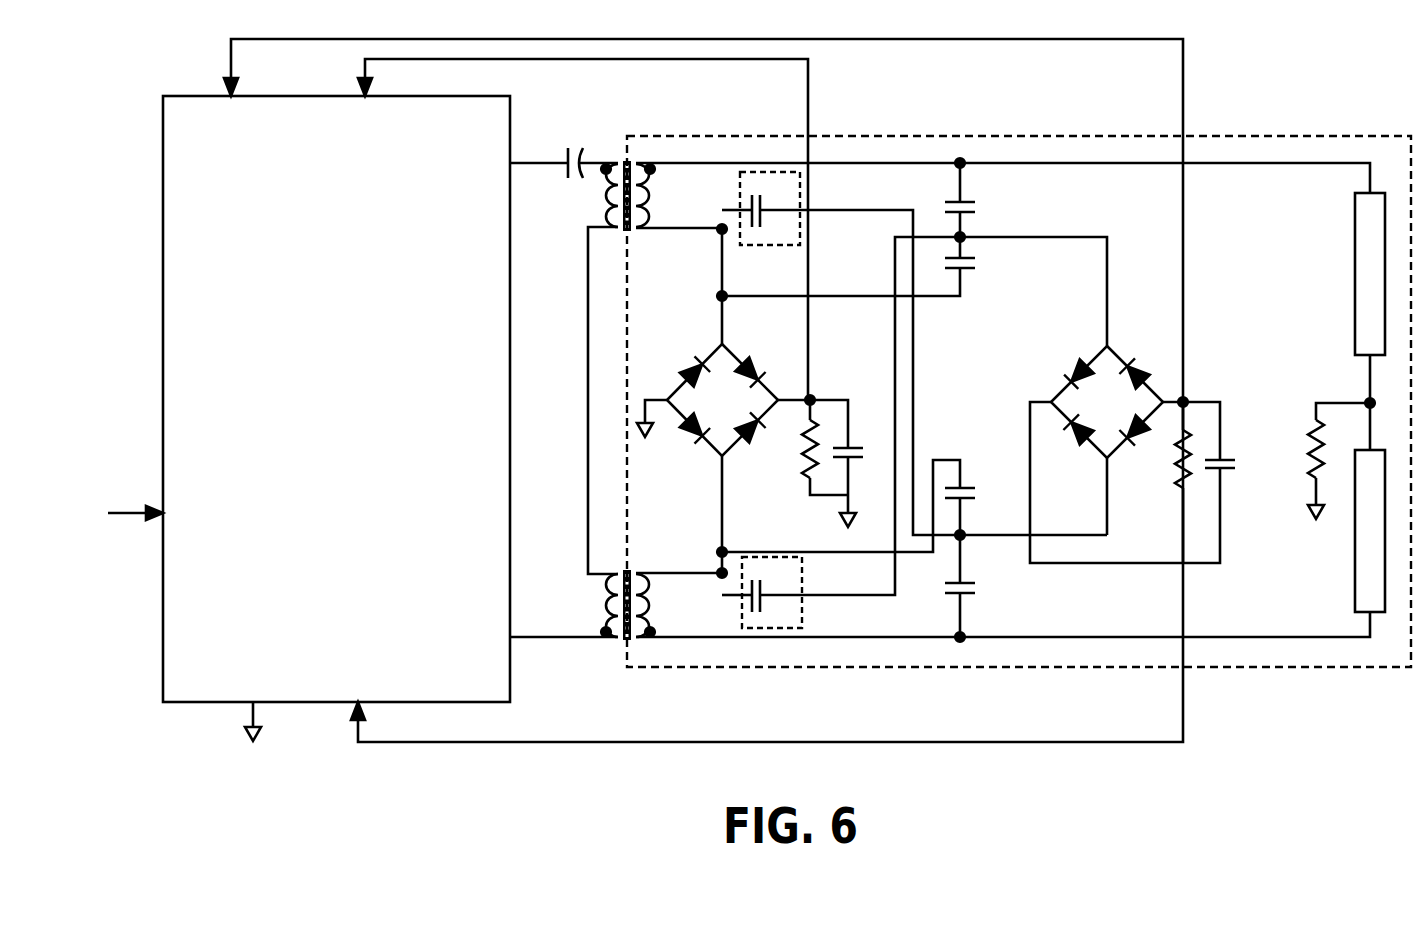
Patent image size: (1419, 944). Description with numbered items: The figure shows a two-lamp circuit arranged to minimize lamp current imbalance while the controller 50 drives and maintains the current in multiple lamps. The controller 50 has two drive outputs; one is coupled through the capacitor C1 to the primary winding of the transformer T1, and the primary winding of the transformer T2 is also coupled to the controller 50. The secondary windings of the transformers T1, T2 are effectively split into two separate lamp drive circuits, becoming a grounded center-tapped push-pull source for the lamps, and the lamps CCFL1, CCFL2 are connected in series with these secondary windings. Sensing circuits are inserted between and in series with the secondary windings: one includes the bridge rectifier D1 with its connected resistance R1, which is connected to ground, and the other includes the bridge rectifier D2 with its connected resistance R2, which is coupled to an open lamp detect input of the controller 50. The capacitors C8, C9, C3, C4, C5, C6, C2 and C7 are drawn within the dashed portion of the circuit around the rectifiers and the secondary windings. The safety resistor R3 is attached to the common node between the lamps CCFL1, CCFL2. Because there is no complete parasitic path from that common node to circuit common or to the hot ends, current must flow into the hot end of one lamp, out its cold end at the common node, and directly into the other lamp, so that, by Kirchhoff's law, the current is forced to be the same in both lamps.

The controller 50 is at (163, 247).
The capacitor C1 is at (570, 149).
The transformer T1 is at (614, 196).
The transformer T2 is at (613, 605).
The capacitor C8 is at (770, 208).
The capacitor C9 is at (772, 592).
The capacitor C3 is at (978, 202).
The capacitor C4 is at (978, 259).
The capacitor C5 is at (978, 497).
The capacitor C6 is at (978, 590).
The bridge rectifier D1 is at (722, 393).
The resistance R1 is at (793, 449).
The capacitor C2 is at (861, 441).
The bridge rectifier D2 is at (1105, 395).
The resistance R2 is at (1166, 459).
The capacitor C7 is at (1237, 476).
The lamp CCFL1 is at (1326, 274).
The lamp CCFL2 is at (1326, 531).
The safety resistor R3 is at (1299, 449).